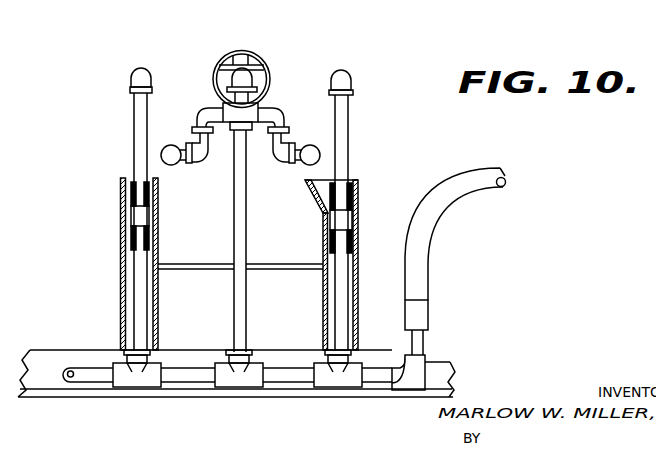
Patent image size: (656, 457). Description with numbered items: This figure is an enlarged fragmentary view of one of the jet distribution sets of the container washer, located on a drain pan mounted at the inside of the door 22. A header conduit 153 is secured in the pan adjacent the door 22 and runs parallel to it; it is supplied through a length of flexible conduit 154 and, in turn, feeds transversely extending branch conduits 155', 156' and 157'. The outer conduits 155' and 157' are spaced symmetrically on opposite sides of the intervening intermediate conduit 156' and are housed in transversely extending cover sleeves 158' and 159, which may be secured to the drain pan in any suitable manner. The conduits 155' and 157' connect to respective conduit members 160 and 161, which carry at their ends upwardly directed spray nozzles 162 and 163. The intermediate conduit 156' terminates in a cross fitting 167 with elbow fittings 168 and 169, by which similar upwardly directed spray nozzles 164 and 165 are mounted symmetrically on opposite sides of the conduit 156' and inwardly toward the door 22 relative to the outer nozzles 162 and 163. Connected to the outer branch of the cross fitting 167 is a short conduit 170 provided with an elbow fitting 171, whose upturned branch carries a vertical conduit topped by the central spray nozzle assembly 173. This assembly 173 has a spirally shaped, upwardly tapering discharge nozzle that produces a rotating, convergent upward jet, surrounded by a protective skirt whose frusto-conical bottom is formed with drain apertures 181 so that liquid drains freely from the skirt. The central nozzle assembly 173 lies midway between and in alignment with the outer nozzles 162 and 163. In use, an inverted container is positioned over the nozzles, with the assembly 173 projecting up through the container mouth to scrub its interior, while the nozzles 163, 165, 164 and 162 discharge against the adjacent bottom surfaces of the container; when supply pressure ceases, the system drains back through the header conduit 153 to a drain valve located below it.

The door 22 is at (188, 398).
The header conduit 153 is at (375, 382).
The flexible conduit 154 is at (427, 253).
The branch conduit 155' is at (358, 338).
The intermediate branch conduit 156' is at (264, 241).
The branch conduit 157' is at (160, 350).
The cover sleeve 158' is at (222, 264).
The cover sleeve 159 is at (360, 232).
The conduit member 160 is at (345, 145).
The conduit member 161 is at (138, 142).
The spray nozzle 162 is at (352, 83).
The spray nozzle 163 is at (148, 72).
The spray nozzle 164 is at (310, 145).
The spray nozzle 165 is at (169, 164).
The cross fitting 167 is at (250, 113).
The elbow fitting 168 is at (280, 118).
The elbow fitting 169 is at (278, 166).
The short conduit 170 is at (215, 97).
The elbow fitting 171 is at (253, 58).
The spray nozzle assembly 173 is at (228, 53).
The drain apertures 181 is at (247, 77).